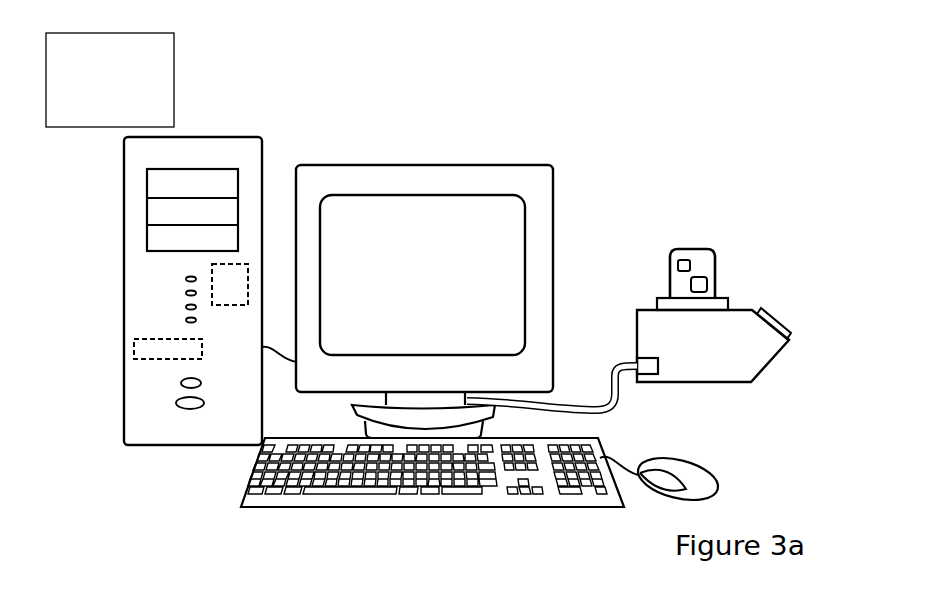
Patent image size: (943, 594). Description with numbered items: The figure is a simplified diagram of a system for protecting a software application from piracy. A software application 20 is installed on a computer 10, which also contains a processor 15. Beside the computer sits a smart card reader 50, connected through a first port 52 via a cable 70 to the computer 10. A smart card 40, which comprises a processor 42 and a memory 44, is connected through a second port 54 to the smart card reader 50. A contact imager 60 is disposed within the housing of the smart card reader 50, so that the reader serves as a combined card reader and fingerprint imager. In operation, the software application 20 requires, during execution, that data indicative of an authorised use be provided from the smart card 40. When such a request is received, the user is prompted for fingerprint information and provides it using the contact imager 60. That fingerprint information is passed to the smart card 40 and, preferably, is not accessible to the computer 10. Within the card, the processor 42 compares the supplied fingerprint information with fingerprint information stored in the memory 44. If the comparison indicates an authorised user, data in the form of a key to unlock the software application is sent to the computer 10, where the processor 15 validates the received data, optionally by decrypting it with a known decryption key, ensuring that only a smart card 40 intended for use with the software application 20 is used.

The computer 10 is at (230, 137).
The processor 15 is at (233, 307).
The software application 20 is at (143, 338).
The smart card 40 is at (706, 249).
The processor 42 is at (680, 262).
The memory 44 is at (706, 280).
The smart card reader 50 is at (703, 360).
The first port 52 is at (640, 357).
The second port 54 is at (660, 298).
The contact imager 60 is at (776, 314).
The cable 70 is at (628, 412).